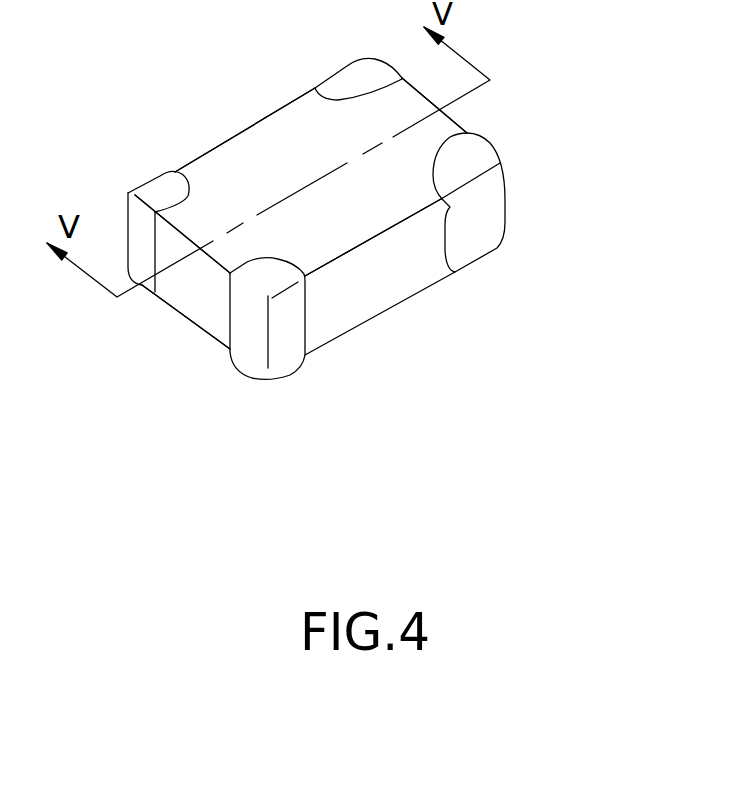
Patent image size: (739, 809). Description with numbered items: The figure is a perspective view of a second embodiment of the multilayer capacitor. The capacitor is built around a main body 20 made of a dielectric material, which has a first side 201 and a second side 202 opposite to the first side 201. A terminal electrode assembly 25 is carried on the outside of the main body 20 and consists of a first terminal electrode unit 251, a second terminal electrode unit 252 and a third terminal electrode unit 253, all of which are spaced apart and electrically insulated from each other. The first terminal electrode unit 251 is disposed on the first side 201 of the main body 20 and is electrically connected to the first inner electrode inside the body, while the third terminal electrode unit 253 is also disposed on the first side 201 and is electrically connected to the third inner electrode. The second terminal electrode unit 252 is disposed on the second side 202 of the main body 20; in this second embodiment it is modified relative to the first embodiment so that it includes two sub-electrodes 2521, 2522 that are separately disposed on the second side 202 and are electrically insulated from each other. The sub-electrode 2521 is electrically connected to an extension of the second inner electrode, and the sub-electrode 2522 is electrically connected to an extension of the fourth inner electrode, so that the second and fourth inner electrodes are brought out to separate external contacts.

The main body 20 is at (238, 135).
The first side 201 is at (498, 115).
The second side 202 is at (200, 370).
The terminal electrode assembly 25 is at (510, 248).
The first terminal electrode unit 251 is at (482, 220).
The second terminal electrode unit 252 is at (247, 276).
The sub-electrode 2521 is at (160, 190).
The sub-electrode 2522 is at (292, 358).
The third terminal electrode unit 253 is at (357, 83).